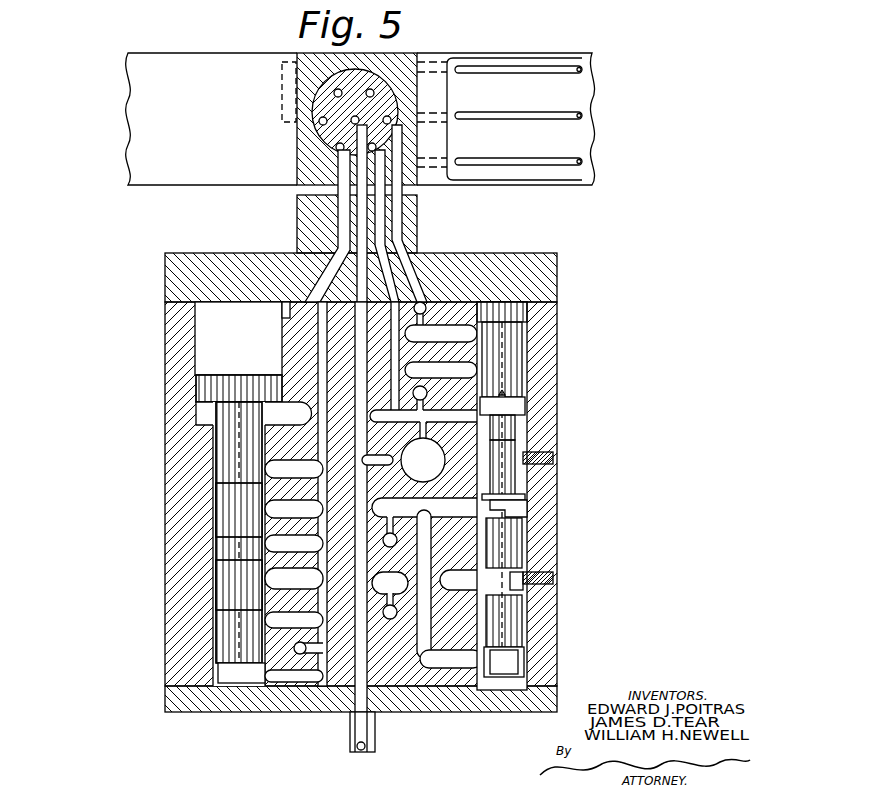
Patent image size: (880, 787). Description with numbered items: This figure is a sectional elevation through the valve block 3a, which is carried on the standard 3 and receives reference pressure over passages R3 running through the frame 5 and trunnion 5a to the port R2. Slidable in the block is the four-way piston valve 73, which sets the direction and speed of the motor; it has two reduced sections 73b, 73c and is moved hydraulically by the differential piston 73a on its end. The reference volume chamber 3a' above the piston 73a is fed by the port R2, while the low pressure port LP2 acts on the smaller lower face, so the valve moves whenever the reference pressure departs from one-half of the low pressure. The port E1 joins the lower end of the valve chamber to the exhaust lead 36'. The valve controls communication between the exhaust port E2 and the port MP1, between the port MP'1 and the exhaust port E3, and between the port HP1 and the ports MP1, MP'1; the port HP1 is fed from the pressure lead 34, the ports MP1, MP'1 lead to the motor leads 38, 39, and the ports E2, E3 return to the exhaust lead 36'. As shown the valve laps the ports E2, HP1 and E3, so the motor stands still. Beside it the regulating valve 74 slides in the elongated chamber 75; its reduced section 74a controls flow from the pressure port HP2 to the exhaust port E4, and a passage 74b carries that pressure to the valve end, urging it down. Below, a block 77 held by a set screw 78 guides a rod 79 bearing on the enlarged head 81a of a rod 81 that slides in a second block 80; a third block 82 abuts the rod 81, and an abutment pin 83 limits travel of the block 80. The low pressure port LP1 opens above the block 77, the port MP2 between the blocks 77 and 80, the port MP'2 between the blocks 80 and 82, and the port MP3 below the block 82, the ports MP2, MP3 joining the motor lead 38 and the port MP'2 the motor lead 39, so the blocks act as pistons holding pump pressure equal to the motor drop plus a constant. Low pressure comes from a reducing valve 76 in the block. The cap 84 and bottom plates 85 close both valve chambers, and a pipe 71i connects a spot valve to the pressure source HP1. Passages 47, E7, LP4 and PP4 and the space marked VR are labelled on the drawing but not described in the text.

The standard 3 is at (284, 0).
The valve block 3a is at (286, 494).
The reference volume chamber 3a' is at (154, 328).
The frame 5 is at (133, 110).
The trunnion 5a is at (307, 74).
The pressure lead 34 is at (358, 730).
The exhaust lead 36' is at (192, 633).
The motor lead 38 is at (558, 540).
The motor lead 39 is at (392, 619).
The passage 47 is at (430, 299).
The pipe 71i is at (558, 397).
The piston valve 73 is at (215, 468).
The piston 73a is at (232, 375).
The reduced section 73b is at (240, 520).
The reduced section 73c is at (240, 580).
The regulating valve 74 is at (558, 371).
The reduced section 74a is at (558, 343).
The passage 74b is at (560, 305).
The elongated chamber 75 is at (557, 500).
The reducing valve 76 is at (558, 443).
The block 77 is at (558, 479).
The set screw 78 is at (556, 457).
The rod 79 is at (558, 414).
The block 80 is at (558, 560).
The rod 81 is at (557, 597).
The enlarged head 81a is at (558, 520).
The third block 82 is at (558, 628).
The abutment pin 83 is at (556, 576).
The cap 84 is at (168, 265).
The bottom plates 85 is at (445, 710).
The exhaust port E1 is at (268, 676).
The exhaust port E2 is at (294, 468).
The exhaust port E3 is at (294, 619).
The exhaust port E4 is at (441, 369).
The exhaust passage E7 is at (360, 224).
The high pressure port HP1 is at (294, 542).
The high pressure port HP2 is at (441, 333).
The low pressure port LP1 is at (556, 423).
The low pressure port LP2 is at (197, 423).
The low pressure passage LP4 is at (372, 238).
The motor pressure port MP1 is at (294, 508).
The motor pressure port MP'1 is at (294, 578).
The motor pressure port MP2 is at (429, 507).
The motor pressure port MP'2 is at (471, 580).
The motor pressure port MP3 is at (451, 658).
The pressure passage PP4 is at (400, 282).
The reference volume port R2 is at (195, 313).
The reference volume passages R3 is at (343, 212).
The valve chamber VR is at (423, 451).